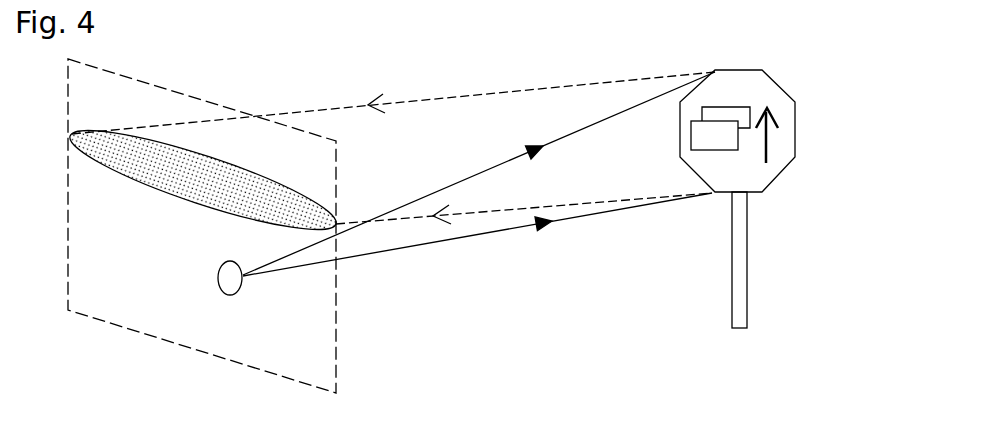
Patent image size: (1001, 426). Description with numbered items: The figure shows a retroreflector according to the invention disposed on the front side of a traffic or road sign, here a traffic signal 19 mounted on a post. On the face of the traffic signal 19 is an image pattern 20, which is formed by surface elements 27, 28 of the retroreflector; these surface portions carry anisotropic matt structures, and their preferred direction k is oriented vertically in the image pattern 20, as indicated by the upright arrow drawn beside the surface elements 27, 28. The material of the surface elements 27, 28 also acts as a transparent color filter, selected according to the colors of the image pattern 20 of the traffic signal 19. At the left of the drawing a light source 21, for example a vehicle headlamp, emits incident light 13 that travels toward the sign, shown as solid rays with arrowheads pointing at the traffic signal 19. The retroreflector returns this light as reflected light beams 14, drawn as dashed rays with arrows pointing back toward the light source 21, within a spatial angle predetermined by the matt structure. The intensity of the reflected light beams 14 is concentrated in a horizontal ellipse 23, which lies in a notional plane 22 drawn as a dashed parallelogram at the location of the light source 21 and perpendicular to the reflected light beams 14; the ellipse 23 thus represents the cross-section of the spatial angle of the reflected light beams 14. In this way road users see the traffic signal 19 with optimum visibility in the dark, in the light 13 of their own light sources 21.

The incident light 13 is at (510, 168).
The reflected light beams 14 is at (503, 210).
The traffic signal 19 is at (775, 185).
The image pattern 20 is at (735, 107).
The light source 21 is at (219, 279).
The notional plane 22 is at (153, 239).
The horizontal ellipse 23 is at (153, 178).
The surface element 27 is at (702, 137).
The surface element 28 is at (723, 113).
The preferred direction k is at (770, 138).